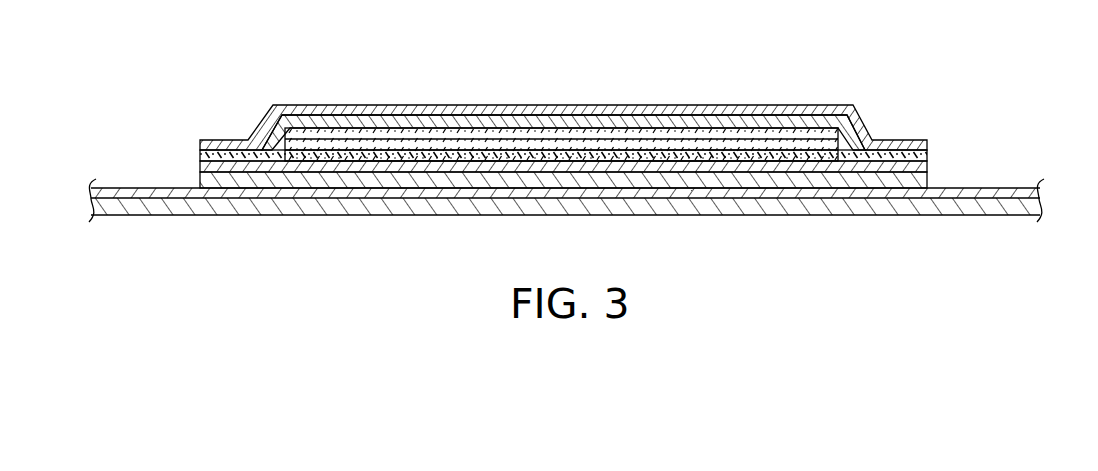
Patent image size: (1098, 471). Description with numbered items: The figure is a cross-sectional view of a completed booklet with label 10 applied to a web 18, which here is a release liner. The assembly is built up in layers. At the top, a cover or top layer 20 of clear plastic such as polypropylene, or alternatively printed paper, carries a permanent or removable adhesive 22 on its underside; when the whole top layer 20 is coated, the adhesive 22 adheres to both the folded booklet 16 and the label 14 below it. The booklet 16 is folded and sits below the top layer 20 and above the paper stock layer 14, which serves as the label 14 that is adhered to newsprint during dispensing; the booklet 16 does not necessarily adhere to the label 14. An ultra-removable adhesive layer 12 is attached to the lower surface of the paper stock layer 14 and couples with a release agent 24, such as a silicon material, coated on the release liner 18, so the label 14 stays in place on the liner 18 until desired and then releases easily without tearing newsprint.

The booklet with label 10 is at (528, 77).
The ultra-removable adhesive layer 12 is at (923, 182).
The paper stock layer 14 is at (927, 170).
The booklet 16 is at (813, 135).
The release liner 18 is at (940, 208).
The top layer 20 is at (907, 140).
The adhesive 22 is at (930, 155).
The release agent 24 is at (980, 190).